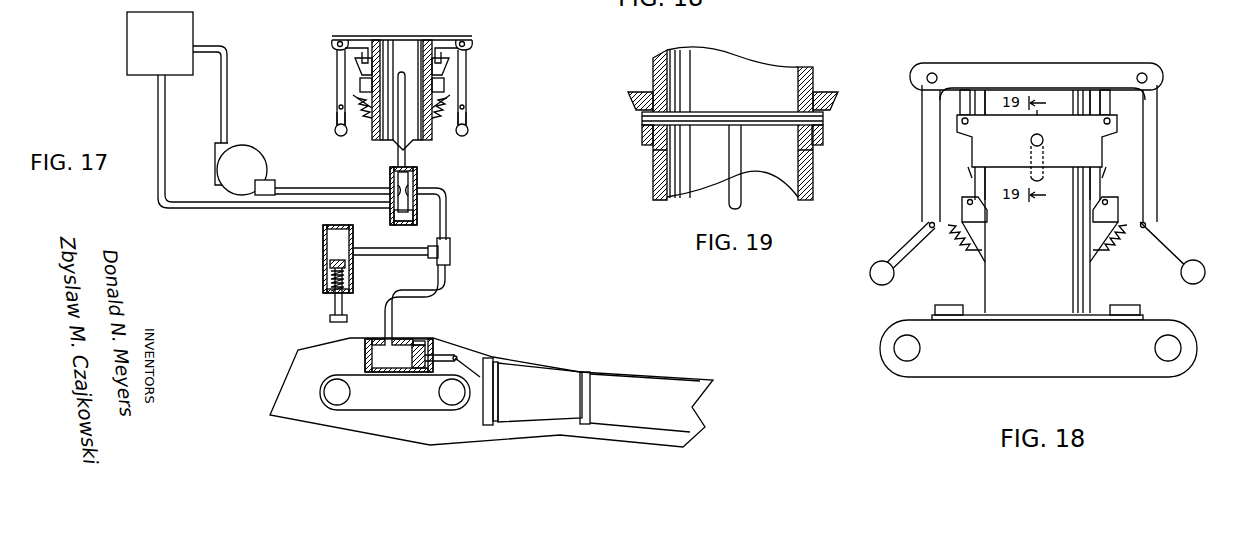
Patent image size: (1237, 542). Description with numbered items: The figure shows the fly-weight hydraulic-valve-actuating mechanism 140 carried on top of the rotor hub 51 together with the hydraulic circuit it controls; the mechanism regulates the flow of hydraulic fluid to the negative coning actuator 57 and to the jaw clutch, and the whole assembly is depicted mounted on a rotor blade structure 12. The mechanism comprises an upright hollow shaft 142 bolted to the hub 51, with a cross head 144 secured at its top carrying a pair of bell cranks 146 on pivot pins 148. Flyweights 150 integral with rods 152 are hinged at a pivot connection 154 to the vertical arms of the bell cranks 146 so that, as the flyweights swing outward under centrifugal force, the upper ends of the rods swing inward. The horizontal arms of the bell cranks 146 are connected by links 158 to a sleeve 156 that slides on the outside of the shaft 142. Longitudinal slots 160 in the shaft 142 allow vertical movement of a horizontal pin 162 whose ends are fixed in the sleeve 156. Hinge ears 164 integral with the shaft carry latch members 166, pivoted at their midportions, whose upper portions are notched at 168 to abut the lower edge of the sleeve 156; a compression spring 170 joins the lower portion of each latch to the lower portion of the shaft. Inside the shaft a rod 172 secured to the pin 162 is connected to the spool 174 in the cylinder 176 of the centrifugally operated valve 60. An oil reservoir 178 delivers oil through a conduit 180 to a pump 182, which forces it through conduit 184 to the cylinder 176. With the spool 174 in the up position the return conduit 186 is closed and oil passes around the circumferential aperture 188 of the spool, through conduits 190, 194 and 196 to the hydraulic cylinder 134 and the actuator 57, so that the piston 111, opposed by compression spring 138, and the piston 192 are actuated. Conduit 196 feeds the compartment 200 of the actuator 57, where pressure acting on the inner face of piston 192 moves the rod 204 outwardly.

In FIG. 17, the boom 12 is at (668, 366).
In FIG. 18, the hub 51 is at (960, 370).
In FIG. 17, the negative coning actuator 57 is at (365, 357).
In FIG. 17, the centrifugally operated valve 60 is at (390, 172).
In FIG. 17, the piston 111 is at (330, 265).
In FIG. 17, the hydraulic cylinder 134 is at (323, 231).
In FIG. 17, the compression spring 138 is at (352, 268).
In FIG. 17, the fly-weight hydraulic-valve-actuating mechanism 140 is at (481, 44).
In FIG. 18, the fly-weight hydraulic-valve-actuating mechanism 140 is at (1084, 57).
In FIG. 17, the upright hollow shaft 142 is at (402, 36).
In FIG. 19, the upright hollow shaft 142 is at (665, 200).
In FIG. 18, the upright hollow shaft 142 is at (1000, 280).
In FIG. 18, the cross head 144 is at (1005, 62).
In FIG. 17, the bell cranks 146 is at (337, 76).
In FIG. 18, the bell cranks 146 is at (922, 142).
In FIG. 17, the pivot pins 148 is at (338, 40).
In FIG. 18, the pivot pins 148 is at (931, 72).
In FIG. 17, the flyweights 150 is at (485, 133).
In FIG. 18, the flyweights 150 is at (1180, 283).
In FIG. 17, the rods 152 is at (337, 118).
In FIG. 18, the rods 152 is at (903, 244).
In FIG. 17, the hinge 154 is at (338, 107).
In FIG. 18, the hinge 154 is at (928, 222).
In FIG. 19, the sleeve 156 is at (835, 90).
In FIG. 18, the sleeve 156 is at (1120, 128).
In FIG. 17, the links 158 is at (358, 52).
In FIG. 18, the links 158 is at (962, 103).
In FIG. 19, the slots 160 is at (652, 148).
In FIG. 18, the slots 160 is at (1030, 177).
In FIG. 17, the pin 162 is at (409, 70).
In FIG. 19, the pin 162 is at (642, 116).
In FIG. 18, the pin 162 is at (1030, 140).
In FIG. 18, the hinge ears 164 is at (1090, 210).
In FIG. 17, the latch members 166 is at (360, 90).
In FIG. 18, the latch members 166 is at (975, 182).
In FIG. 18, the notch 168 is at (968, 160).
In FIG. 17, the compression spring 170 is at (440, 125).
In FIG. 18, the compression spring 170 is at (960, 243).
In FIG. 17, the rod 172 is at (410, 159).
In FIG. 19, the rod 172 is at (745, 205).
In FIG. 17, the spool 174 is at (410, 178).
In FIG. 17, the cylinder 176 is at (390, 215).
In FIG. 17, the oil reservoir 178 is at (194, 28).
In FIG. 17, the conduit 180 is at (228, 97).
In FIG. 17, the pump 182 is at (258, 160).
In FIG. 17, the conduit 184 is at (310, 187).
In FIG. 17, the return conduit 186 is at (228, 209).
In FIG. 17, the circumferential aperture 188 is at (418, 190).
In FIG. 17, the conduit 190 is at (447, 248).
In FIG. 17, the piston 192 is at (418, 343).
In FIG. 17, the conduit 194 is at (403, 249).
In FIG. 17, the conduit 196 is at (447, 287).
In FIG. 17, the compartment 200 is at (426, 350).
In FIG. 17, the rod 204 is at (455, 356).